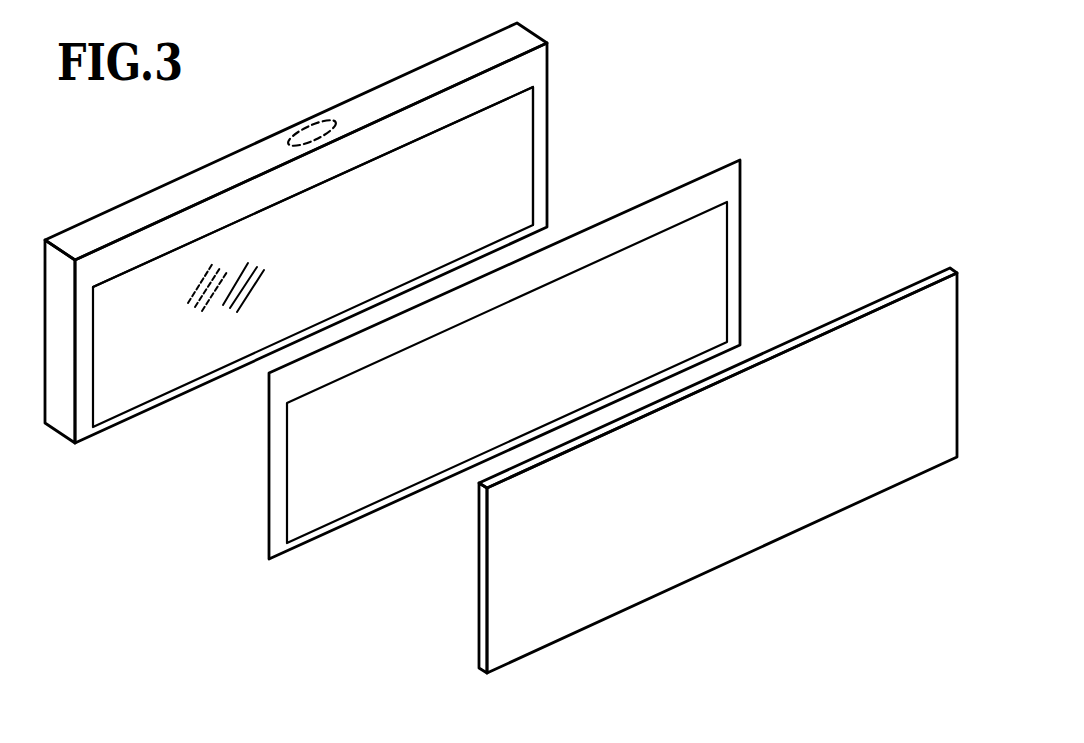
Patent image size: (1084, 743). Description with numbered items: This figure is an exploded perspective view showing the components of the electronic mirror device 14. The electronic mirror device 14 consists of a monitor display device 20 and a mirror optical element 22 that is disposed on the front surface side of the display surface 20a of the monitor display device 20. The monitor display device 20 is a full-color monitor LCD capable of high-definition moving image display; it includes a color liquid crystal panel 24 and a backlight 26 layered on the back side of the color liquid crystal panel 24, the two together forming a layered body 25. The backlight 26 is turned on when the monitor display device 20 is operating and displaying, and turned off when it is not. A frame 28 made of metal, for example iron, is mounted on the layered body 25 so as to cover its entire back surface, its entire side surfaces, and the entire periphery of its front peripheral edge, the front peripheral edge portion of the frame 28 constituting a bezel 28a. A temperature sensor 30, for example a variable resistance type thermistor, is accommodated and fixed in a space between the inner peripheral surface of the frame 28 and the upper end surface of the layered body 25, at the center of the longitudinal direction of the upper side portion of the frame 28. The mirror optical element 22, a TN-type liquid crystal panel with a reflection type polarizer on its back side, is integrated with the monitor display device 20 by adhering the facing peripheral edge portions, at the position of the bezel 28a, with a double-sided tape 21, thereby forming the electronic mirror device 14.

The electronic mirror device 14 is at (838, 108).
The monitor display device 20 is at (359, 276).
The display surface 20a is at (463, 155).
The double-sided tape 21 is at (753, 237).
The mirror optical element 22 is at (868, 293).
The color liquid crystal panel 24 is at (238, 288).
The layered body 25 is at (157, 468).
The backlight 26 is at (204, 305).
The frame 28 is at (388, 103).
The bezel 28a is at (458, 103).
The temperature sensor 30 is at (300, 122).